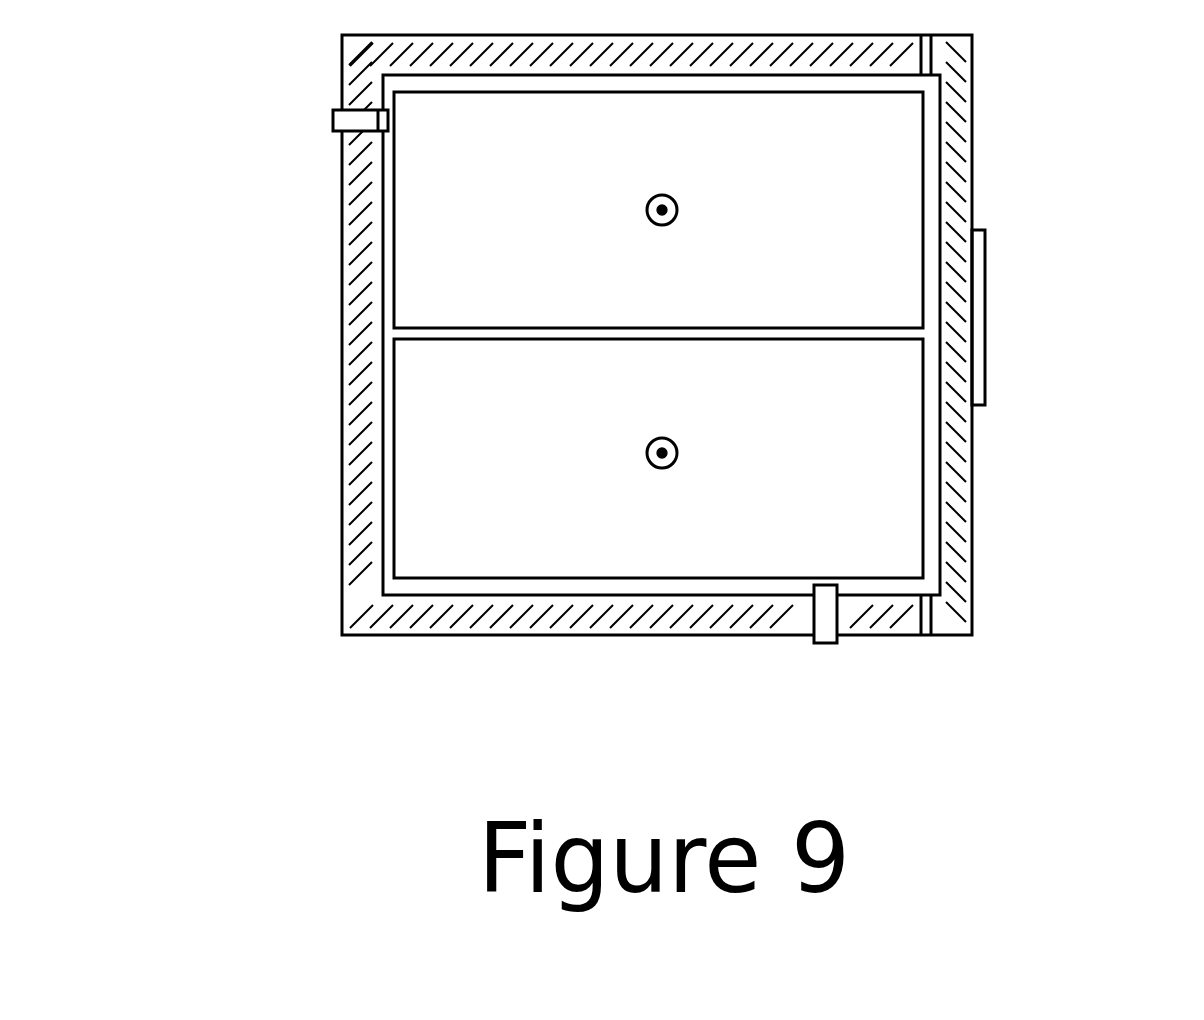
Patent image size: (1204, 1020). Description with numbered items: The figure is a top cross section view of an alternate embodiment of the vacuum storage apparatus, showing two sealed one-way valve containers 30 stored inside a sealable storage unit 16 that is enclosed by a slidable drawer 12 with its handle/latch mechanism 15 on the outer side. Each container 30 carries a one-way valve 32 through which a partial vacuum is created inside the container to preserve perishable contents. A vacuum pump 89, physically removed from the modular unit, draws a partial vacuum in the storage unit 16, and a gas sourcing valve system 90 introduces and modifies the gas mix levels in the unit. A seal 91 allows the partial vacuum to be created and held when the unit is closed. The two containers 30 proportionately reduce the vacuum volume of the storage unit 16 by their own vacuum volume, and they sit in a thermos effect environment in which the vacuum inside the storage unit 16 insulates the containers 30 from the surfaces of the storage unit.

The drawer 12 is at (972, 180).
The handle/latch mechanism 15 is at (990, 318).
The sealable storage unit 16 is at (935, 527).
The container 30 is at (889, 142).
The one-way valve 32 is at (678, 212).
The vacuum pump 89 is at (330, 118).
The gas sourcing valve system 90 is at (822, 644).
The seal 91 is at (923, 637).